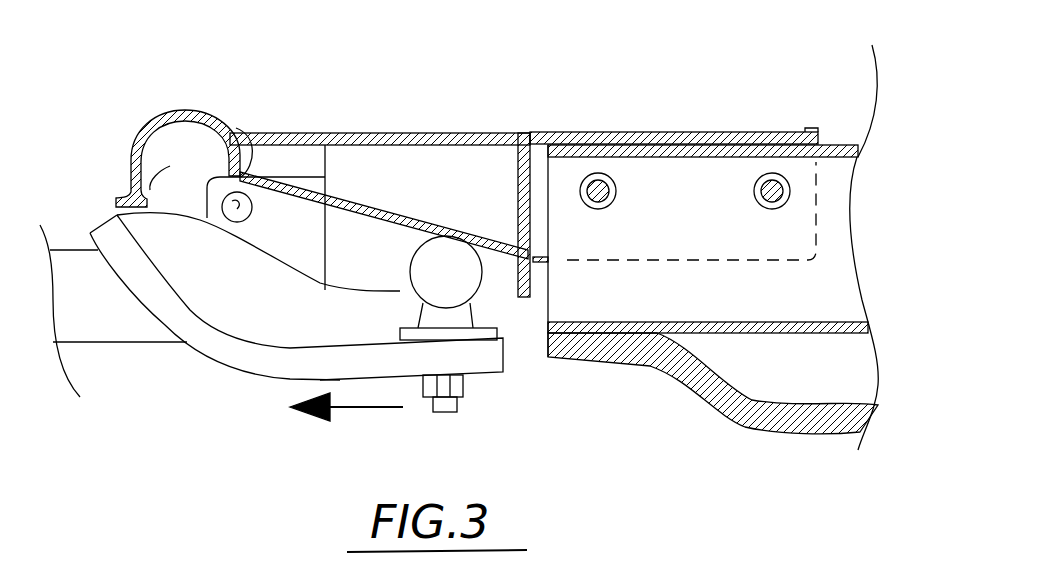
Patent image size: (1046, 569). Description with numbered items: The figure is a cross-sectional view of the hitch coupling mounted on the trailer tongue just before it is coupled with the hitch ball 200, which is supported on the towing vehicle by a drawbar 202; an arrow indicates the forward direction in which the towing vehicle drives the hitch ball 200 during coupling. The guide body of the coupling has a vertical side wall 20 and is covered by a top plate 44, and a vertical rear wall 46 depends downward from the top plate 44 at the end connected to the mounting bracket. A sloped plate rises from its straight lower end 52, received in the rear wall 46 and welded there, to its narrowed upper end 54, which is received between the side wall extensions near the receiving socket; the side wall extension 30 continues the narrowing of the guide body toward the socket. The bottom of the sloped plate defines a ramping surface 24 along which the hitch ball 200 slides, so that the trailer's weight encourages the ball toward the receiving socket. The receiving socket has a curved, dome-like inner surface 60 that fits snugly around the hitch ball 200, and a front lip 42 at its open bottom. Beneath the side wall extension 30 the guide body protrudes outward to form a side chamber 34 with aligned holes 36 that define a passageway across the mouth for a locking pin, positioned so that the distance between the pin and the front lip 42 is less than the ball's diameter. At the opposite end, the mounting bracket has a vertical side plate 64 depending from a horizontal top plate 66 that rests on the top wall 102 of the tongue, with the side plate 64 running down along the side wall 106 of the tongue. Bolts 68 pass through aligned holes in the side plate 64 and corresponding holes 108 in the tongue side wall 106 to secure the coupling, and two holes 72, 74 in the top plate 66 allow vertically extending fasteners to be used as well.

The side wall 20 is at (347, 292).
The ramping surface 24 is at (386, 227).
The side wall extension 30 is at (270, 162).
The side chamber 34 is at (273, 238).
The aligned holes 36 is at (220, 215).
The front lip 42 is at (157, 212).
The top plate 44 is at (452, 133).
The rear wall 46 is at (518, 192).
The lower end of sloped plate 52 is at (530, 250).
The upper end of sloped plate 54 is at (253, 137).
The inner surface 60 is at (157, 138).
The side plate 64 is at (538, 167).
The top plate of mounting bracket 66 is at (690, 150).
The bolts 68 is at (612, 176).
The hole in top plate 72 is at (605, 135).
The hole in top plate 74 is at (760, 133).
The top wall of trailer tongue 102 is at (706, 157).
The side wall of trailer tongue 106 is at (760, 298).
The holes in tongue side walls 108 is at (583, 203).
The hitch ball 200 is at (468, 283).
The drawbar 202 is at (240, 355).